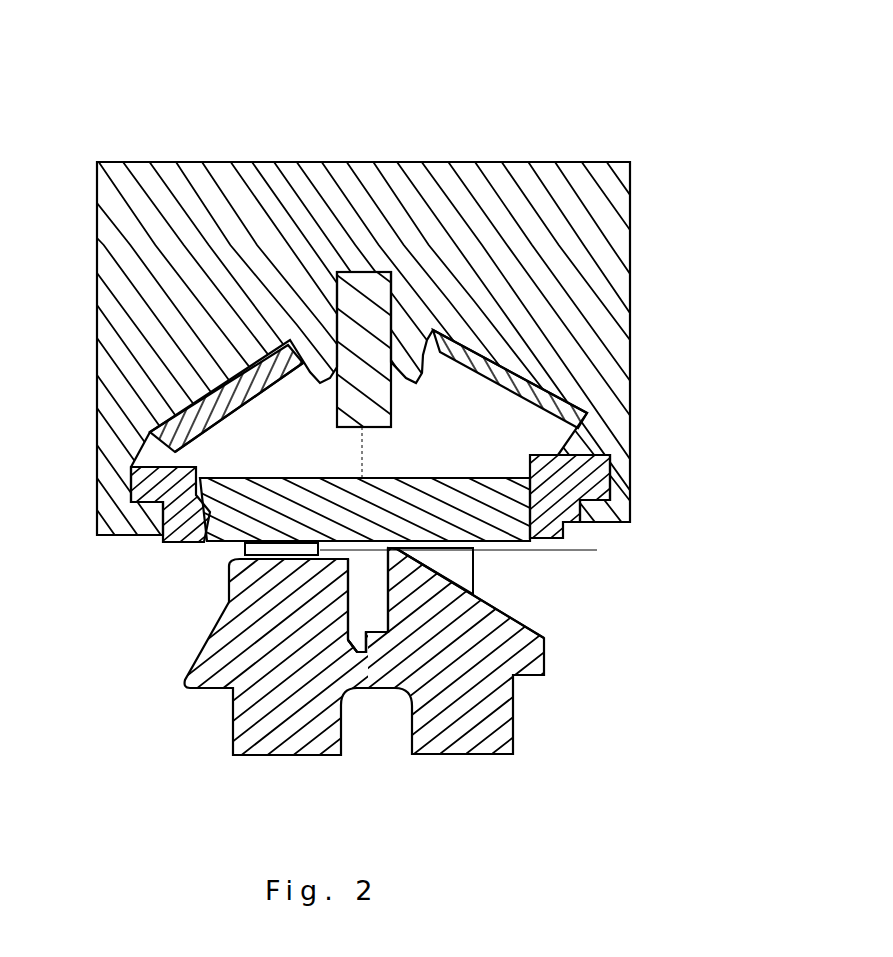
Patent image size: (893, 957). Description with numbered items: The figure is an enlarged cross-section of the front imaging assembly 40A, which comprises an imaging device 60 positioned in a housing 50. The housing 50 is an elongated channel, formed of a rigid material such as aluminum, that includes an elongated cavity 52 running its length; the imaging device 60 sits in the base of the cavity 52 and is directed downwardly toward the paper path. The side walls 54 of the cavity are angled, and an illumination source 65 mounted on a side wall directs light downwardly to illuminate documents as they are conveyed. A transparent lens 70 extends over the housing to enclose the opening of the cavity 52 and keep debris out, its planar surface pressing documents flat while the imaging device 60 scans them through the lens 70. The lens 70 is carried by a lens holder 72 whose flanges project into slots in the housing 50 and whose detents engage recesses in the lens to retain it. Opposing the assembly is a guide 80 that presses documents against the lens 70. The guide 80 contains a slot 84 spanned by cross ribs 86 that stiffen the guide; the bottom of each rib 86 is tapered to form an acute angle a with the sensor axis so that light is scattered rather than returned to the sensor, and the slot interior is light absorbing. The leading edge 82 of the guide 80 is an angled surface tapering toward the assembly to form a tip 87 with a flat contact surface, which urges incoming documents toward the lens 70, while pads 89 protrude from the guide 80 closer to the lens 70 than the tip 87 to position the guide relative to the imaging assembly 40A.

The front imaging assembly 40A is at (400, 130).
The housing 50 is at (568, 177).
The cavity 52 is at (455, 433).
The side walls 54 is at (256, 392).
The imaging device 60 is at (393, 411).
The illumination source 65 is at (205, 436).
The lens 70 is at (250, 515).
The lens holder 72 is at (210, 530).
The guide 80 is at (193, 656).
The leading edge 82 is at (522, 613).
The slot 84 is at (366, 584).
The cross ribs 86 is at (365, 636).
The tip 87 is at (475, 557).
The pads 89 is at (245, 549).
The acute angle a is at (363, 459).